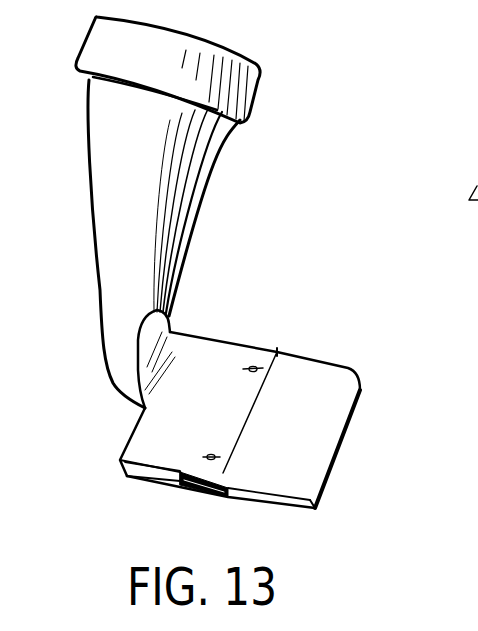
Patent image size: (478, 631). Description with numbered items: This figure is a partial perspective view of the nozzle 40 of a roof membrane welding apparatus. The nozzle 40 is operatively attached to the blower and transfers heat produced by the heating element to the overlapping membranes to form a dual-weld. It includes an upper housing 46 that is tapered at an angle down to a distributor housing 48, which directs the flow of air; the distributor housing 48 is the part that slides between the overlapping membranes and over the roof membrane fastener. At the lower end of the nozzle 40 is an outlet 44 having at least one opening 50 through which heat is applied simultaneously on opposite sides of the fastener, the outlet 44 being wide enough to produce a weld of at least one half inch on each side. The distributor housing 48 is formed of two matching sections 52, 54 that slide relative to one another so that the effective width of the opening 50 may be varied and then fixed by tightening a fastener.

The nozzle 40 is at (180, 178).
The outlet 44 is at (157, 483).
The upper housing 46 is at (117, 200).
The distributor housing 48 is at (350, 390).
The opening 50 is at (283, 498).
The matching section 52 is at (218, 362).
The matching section 54 is at (327, 377).